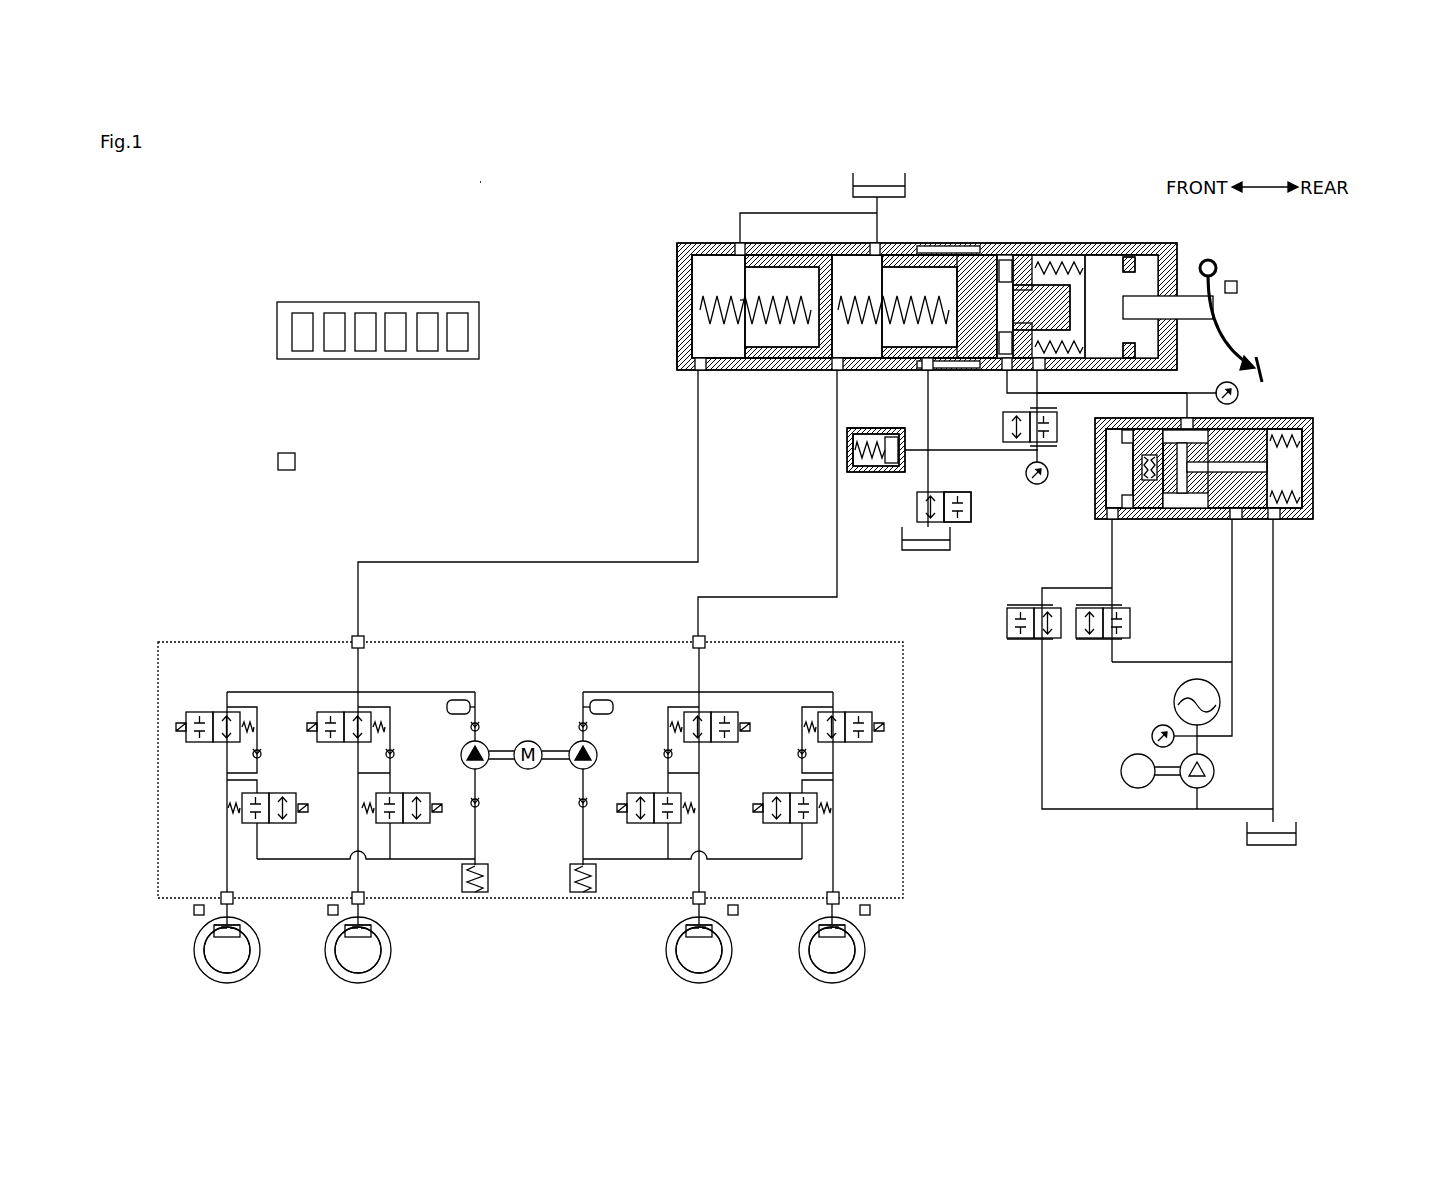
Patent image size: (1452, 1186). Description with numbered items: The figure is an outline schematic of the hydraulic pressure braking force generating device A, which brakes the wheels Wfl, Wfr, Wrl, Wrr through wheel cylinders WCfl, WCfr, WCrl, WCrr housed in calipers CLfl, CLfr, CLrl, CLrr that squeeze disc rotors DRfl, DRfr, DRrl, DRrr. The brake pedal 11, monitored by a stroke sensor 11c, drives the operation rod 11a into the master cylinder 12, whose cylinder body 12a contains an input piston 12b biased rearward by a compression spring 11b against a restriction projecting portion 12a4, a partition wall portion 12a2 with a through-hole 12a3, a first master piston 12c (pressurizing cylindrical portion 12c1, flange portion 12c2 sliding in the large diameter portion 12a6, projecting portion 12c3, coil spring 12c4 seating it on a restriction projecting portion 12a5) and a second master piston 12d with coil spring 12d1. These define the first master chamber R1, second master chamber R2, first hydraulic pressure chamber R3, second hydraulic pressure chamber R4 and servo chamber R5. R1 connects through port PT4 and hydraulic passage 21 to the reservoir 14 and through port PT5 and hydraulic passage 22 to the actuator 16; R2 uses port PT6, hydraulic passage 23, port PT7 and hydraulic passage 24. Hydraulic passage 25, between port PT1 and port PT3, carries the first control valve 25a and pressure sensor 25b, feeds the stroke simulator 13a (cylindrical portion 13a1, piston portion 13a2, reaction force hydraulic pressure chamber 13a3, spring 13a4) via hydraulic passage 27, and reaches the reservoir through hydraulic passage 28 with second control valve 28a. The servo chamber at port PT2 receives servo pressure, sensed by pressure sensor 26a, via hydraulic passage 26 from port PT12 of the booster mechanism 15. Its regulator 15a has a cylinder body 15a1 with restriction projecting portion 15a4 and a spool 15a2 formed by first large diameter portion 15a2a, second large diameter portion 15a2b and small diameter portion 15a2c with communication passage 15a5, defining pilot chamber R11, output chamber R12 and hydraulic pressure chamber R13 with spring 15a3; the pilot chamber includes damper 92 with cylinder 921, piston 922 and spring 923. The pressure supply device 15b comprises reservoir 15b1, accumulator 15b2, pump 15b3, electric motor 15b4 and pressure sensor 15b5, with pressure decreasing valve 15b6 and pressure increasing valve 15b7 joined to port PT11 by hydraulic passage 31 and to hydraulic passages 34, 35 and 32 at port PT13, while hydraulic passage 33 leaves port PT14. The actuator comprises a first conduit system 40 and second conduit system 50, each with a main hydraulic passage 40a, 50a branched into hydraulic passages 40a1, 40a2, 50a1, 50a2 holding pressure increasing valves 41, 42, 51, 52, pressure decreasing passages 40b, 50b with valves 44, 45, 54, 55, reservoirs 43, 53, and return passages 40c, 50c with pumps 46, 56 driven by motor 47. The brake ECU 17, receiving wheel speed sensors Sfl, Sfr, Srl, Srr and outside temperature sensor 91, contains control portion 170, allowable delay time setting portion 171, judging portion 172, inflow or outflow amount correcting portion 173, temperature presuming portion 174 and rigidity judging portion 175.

The hydraulic pressure braking force generating device A is at (505, 195).
The brake pedal 11 is at (1222, 336).
The operation rod 11a is at (1192, 305).
The compression spring 11b is at (1058, 285).
The stroke sensor 11c is at (1240, 285).
The master cylinder 12 is at (667, 262).
The cylinder body 12a is at (678, 300).
The partition wall portion 12a2 is at (1022, 258).
The through-hole 12a3 is at (1038, 280).
The restriction projecting portion 12a4 is at (1134, 255).
The restriction projecting portion 12a5 is at (1002, 252).
The large diameter portion 12a6 is at (950, 256).
The input piston 12b is at (1112, 262).
The first master piston 12c is at (884, 358).
The pressurizing cylindrical portion 12c1 is at (917, 247).
The flange portion 12c2 is at (997, 262).
The projecting portion 12c3 is at (1090, 258).
The coil spring 12c4 is at (880, 372).
The second master piston 12d is at (772, 358).
The coil spring 12d1 is at (760, 367).
The stroke simulator 13a is at (873, 486).
The cylindrical portion 13a1 is at (860, 452).
The piston portion 13a2 is at (858, 468).
The reaction force hydraulic pressure chamber 13a3 is at (848, 436).
The spring 13a4 is at (849, 446).
The reservoir 14 is at (852, 186).
The booster mechanism 15 is at (1379, 600).
The regulator 15a is at (1326, 478).
The cylinder body 15a1 is at (1314, 486).
The spool 15a2 is at (1312, 446).
The first large diameter portion 15a2a is at (1245, 512).
The second large diameter portion 15a2b is at (1165, 512).
The small diameter portion 15a2c is at (1178, 510).
The spring 15a3 is at (1294, 432).
The restriction projecting portion 15a4 is at (1122, 515).
The communication passage 15a5 is at (1285, 450).
The pressure supply device 15b is at (1308, 688).
The reservoir 15b1 is at (1297, 832).
The accumulator 15b2 is at (1174, 702).
The pump 15b3 is at (1214, 771).
The electric motor 15b4 is at (1121, 771).
The pressure sensor 15b5 is at (1152, 736).
The pressure decreasing valve 15b6 is at (1028, 636).
The pressure increasing valve 15b7 is at (1098, 636).
The actuator 16 is at (828, 636).
The brake ECU 17 is at (360, 302).
The control portion 170 is at (300, 335).
The allowable delay time setting portion 171 is at (335, 343).
The judging portion 172 is at (364, 344).
The inflow or outflow amount correcting portion 173 is at (394, 343).
The temperature presuming portion 174 is at (427, 343).
The rigidity judging portion 175 is at (462, 340).
The hydraulic passage 21 is at (870, 210).
The hydraulic passage 22 is at (770, 597).
The hydraulic passage 23 is at (765, 213).
The hydraulic passage 24 is at (520, 562).
The hydraulic passage 25 is at (1006, 450).
The first control valve 25a is at (1048, 425).
The pressure sensor 25b is at (1045, 472).
The hydraulic passage 26 is at (1172, 393).
The pressure sensor 26a is at (1240, 394).
The hydraulic passage 27 is at (918, 452).
The hydraulic passage 28 is at (932, 482).
The second control valve 28a is at (962, 502).
The hydraulic passage 31 is at (1108, 588).
The hydraulic passage 32 is at (1232, 650).
The hydraulic passage 33 is at (1274, 742).
The hydraulic passage 34 is at (1040, 718).
The hydraulic passage 35 is at (1158, 662).
The first conduit system 40 is at (809, 680).
The hydraulic passage 40a is at (701, 680).
The branched hydraulic passage 40a1 is at (699, 780).
The branched hydraulic passage 40a2 is at (833, 782).
The hydraulic passage 40b is at (728, 859).
The hydraulic passage 40c is at (584, 797).
The first pressure increasing control valve 41 is at (742, 718).
The second pressure increasing valve 42 is at (838, 712).
The reservoir 43 is at (583, 892).
The first pressure decreasing control valve 44 is at (654, 793).
The first pressure decreasing control valve 45 is at (788, 793).
The pump 46 is at (598, 754).
The motor 47 is at (525, 741).
The second conduit system 50 is at (221, 681).
The hydraulic passage 50a is at (356, 672).
The branched hydraulic passage 50a1 is at (358, 780).
The branched hydraulic passage 50a2 is at (227, 780).
The hydraulic passage 50b is at (330, 859).
The hydraulic passage 50c is at (474, 795).
The first pressure increasing control valve 51 is at (317, 718).
The second pressure increasing valve 52 is at (204, 712).
The reservoir 53 is at (475, 892).
The second pressure decreasing control valve 54 is at (402, 793).
The second pressure decreasing control valve 55 is at (270, 793).
The pump 56 is at (461, 755).
The outside temperature sensor 91 is at (285, 470).
The damper 92 is at (1237, 405).
The cylinder 921 is at (1120, 394).
The piston 922 is at (1125, 470).
The spring 923 is at (1142, 512).
The first master chamber R1 is at (855, 360).
The second master chamber R2 is at (733, 360).
The first hydraulic pressure chamber R3 is at (1100, 372).
The second hydraulic pressure chamber R4 is at (958, 372).
The servo chamber R5 is at (1003, 362).
The pilot chamber R11 is at (1110, 496).
The output chamber R12 is at (1203, 508).
The hydraulic pressure chamber R13 is at (1310, 492).
The port PT1 is at (1040, 372).
The port PT2 is at (1005, 380).
The port PT3 is at (925, 372).
The port PT4 is at (872, 244).
The port PT5 is at (834, 372).
The port PT6 is at (737, 244).
The port PT7 is at (697, 372).
The port PT11 is at (1108, 517).
The port PT12 is at (1183, 417).
The port PT13 is at (1240, 518).
The port PT14 is at (1262, 515).
The left front wheel Wfl is at (215, 980).
The right front wheel Wfr is at (348, 980).
The left rear wheel Wrl is at (710, 980).
The right rear wheel Wrr is at (848, 980).
The wheel speed sensor Sfl is at (194, 913).
The wheel speed sensor Sfr is at (328, 913).
The wheel speed sensor Srl is at (740, 913).
The wheel speed sensor Srr is at (872, 913).
The caliper CLfl is at (215, 932).
The caliper CLfr is at (346, 932).
The caliper CLrl is at (714, 932).
The caliper CLrr is at (848, 932).
The wheel cylinder WCfl is at (212, 940).
The wheel cylinder WCfr is at (343, 940).
The wheel cylinder WCrl is at (716, 940).
The wheel cylinder WCrr is at (850, 940).
The disc rotor DRfl is at (208, 955).
The disc rotor DRfr is at (340, 955).
The disc rotor DRrl is at (718, 955).
The disc rotor DRrr is at (856, 955).